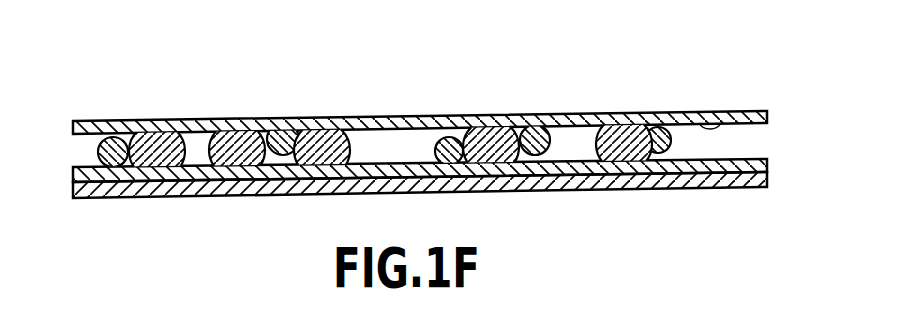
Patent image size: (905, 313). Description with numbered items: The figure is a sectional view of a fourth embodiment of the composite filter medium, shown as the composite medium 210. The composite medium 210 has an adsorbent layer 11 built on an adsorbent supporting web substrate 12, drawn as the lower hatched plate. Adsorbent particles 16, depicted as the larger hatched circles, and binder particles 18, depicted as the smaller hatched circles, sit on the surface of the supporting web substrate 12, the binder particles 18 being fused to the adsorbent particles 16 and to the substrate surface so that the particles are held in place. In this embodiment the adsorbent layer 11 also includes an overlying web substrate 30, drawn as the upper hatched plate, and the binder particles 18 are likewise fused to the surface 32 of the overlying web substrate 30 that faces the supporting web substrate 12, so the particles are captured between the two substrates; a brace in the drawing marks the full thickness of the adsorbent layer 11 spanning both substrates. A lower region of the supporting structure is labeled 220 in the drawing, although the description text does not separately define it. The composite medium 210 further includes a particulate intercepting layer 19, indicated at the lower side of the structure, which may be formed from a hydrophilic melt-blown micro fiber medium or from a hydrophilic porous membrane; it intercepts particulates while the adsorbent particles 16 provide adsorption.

The composite medium 210 is at (569, 64).
The adsorbent layer 11 is at (783, 173).
The overlying web substrate 30 is at (747, 111).
The surface of the overlying web substrate 32 is at (701, 124).
The supporting web substrate 12 is at (420, 210).
The electrode layer 220 is at (218, 188).
The adsorbent particles 16 is at (338, 135).
The binder particles 18 is at (288, 132).
The particulate intercepting layer 19 is at (808, 184).